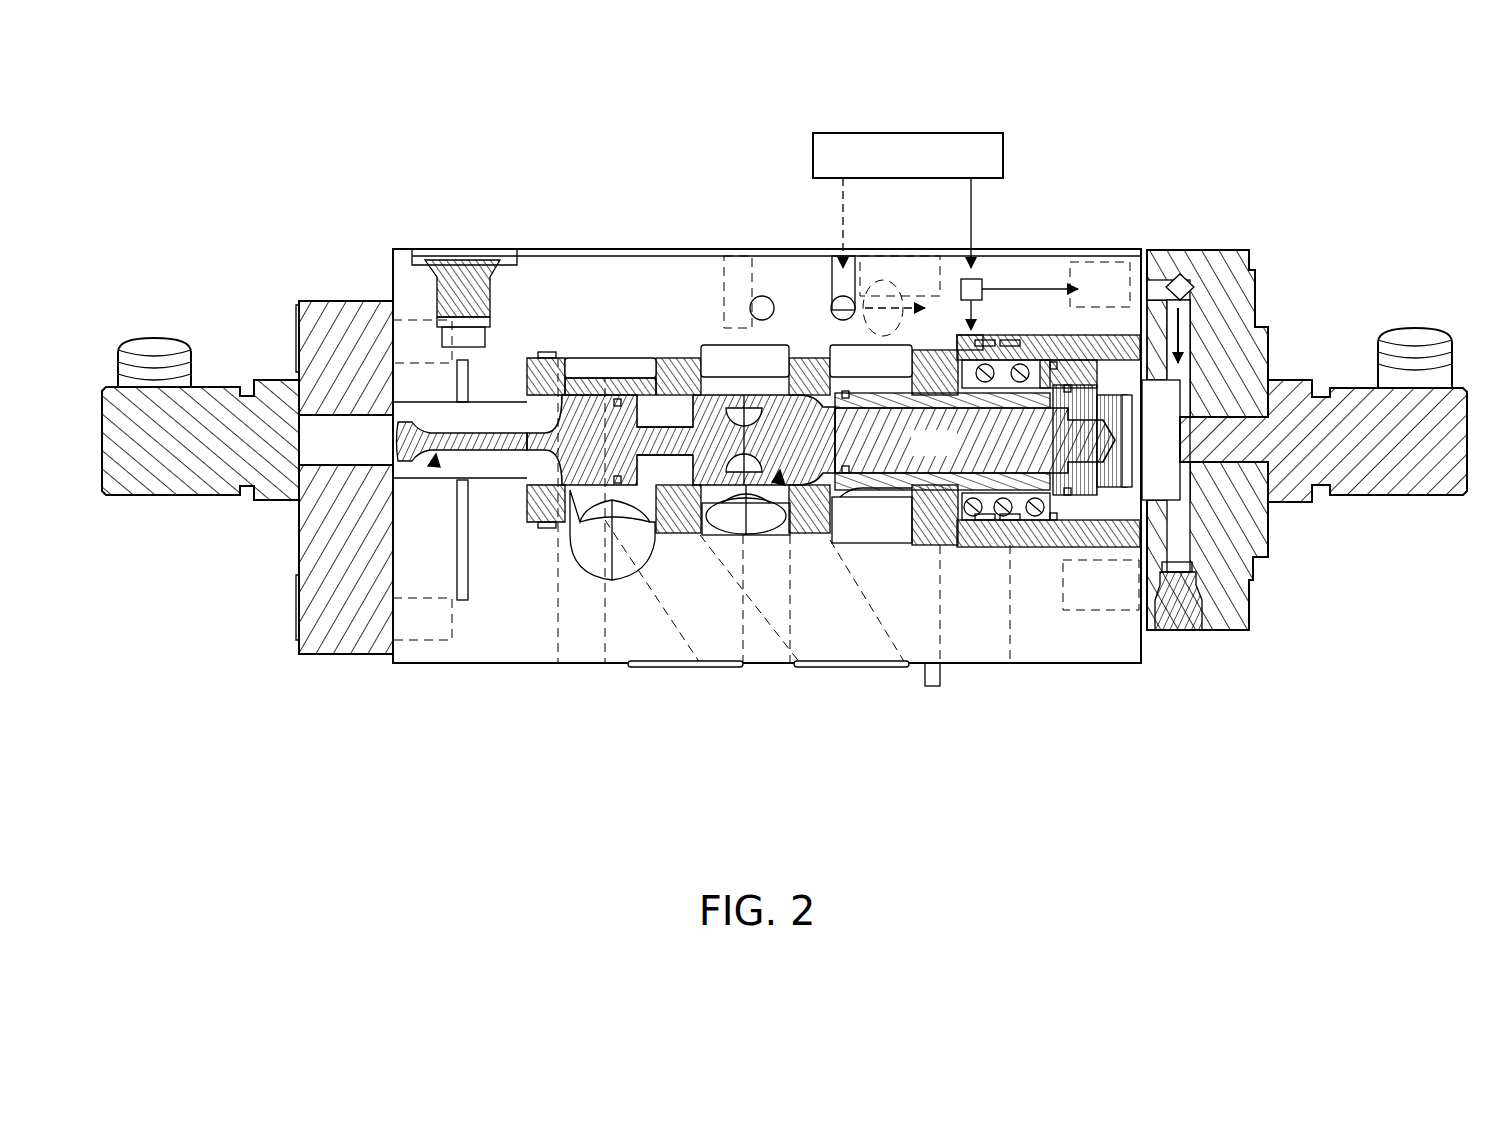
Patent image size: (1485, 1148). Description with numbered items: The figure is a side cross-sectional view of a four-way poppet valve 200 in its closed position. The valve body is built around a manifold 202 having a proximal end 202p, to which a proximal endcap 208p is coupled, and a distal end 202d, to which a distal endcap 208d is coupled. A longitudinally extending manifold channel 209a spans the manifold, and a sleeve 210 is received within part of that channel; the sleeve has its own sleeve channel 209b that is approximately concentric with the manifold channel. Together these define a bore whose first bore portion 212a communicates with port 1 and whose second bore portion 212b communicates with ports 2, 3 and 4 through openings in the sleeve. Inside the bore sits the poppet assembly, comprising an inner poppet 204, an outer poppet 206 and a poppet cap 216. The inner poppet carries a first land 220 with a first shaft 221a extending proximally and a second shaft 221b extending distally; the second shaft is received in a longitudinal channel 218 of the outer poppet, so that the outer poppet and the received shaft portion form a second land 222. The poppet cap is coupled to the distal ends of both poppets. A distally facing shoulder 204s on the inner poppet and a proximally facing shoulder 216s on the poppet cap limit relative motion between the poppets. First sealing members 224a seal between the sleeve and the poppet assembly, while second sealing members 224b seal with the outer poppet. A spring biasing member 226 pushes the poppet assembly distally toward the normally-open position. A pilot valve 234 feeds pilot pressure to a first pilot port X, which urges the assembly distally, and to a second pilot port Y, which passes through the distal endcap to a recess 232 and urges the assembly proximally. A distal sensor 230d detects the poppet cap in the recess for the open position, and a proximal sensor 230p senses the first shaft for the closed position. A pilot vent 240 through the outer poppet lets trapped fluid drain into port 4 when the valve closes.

The poppet valve 200 is at (1260, 136).
The manifold 202 is at (648, 307).
The proximal end 202p is at (432, 745).
The distal end 202d is at (1070, 745).
The inner poppet 204 is at (512, 478).
The distally facing shoulder 204s is at (795, 320).
The outer poppet 206 is at (900, 543).
The proximal endcap 208p is at (345, 655).
The distal endcap 208d is at (1215, 632).
The manifold channel 209a is at (605, 545).
The sleeve channel 209b is at (530, 385).
The sleeve 210 is at (650, 560).
The first bore portion 212a is at (437, 470).
The second bore portion 212b is at (765, 535).
The poppet cap 216 is at (1120, 555).
The proximally facing shoulder 216s is at (1092, 610).
The longitudinal channel 218 is at (1035, 555).
The first land 220 is at (580, 453).
The first shaft 221a is at (408, 410).
The second shaft 221b is at (712, 453).
The second land 222 is at (983, 440).
The first sealing member 224a is at (1063, 290).
The second sealing member 224b is at (1094, 335).
The biasing member 226 is at (985, 560).
The proximal sensor 230p is at (180, 500).
The distal sensor 230d is at (1383, 498).
The recess 232 is at (1232, 382).
The pilot valve 234 is at (890, 168).
The pilot vent 240 is at (870, 300).
The port 1 is at (468, 418).
The port 2 is at (623, 365).
The port 3 is at (731, 360).
The port 4 is at (871, 360).
The first pilot port X is at (968, 330).
The second pilot port Y is at (1165, 440).